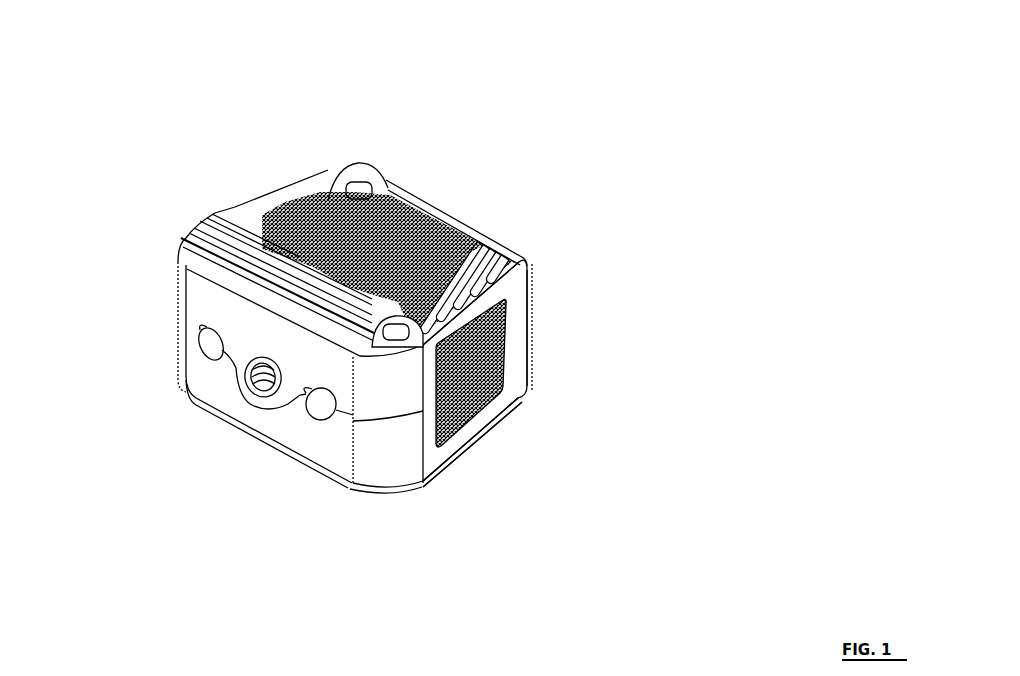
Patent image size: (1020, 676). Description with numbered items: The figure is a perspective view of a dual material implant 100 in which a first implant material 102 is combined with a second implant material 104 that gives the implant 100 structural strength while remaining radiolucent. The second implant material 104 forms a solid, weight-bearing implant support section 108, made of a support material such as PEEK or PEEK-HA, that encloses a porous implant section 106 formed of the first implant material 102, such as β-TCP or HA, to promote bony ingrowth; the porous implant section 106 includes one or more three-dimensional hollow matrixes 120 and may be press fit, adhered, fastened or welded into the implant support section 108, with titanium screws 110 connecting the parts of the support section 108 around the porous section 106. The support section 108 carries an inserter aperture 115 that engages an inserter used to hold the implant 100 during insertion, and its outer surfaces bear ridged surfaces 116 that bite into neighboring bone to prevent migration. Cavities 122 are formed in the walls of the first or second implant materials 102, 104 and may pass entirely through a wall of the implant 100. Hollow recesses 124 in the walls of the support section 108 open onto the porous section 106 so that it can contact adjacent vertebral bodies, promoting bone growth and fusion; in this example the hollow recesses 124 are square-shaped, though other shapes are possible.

The implant 100 is at (596, 52).
The first implant material 102 is at (443, 255).
The second implant material 104 is at (503, 337).
The porous implant section 106 is at (430, 272).
The implant support section 108 is at (487, 423).
The titanium screws 110 is at (367, 190).
The inserter aperture 115 is at (255, 390).
The ridged surface 116 is at (235, 207).
The 3D hollow matrix 120 is at (502, 368).
The cavity 122 is at (398, 228).
The hollow recess 124 is at (330, 213).